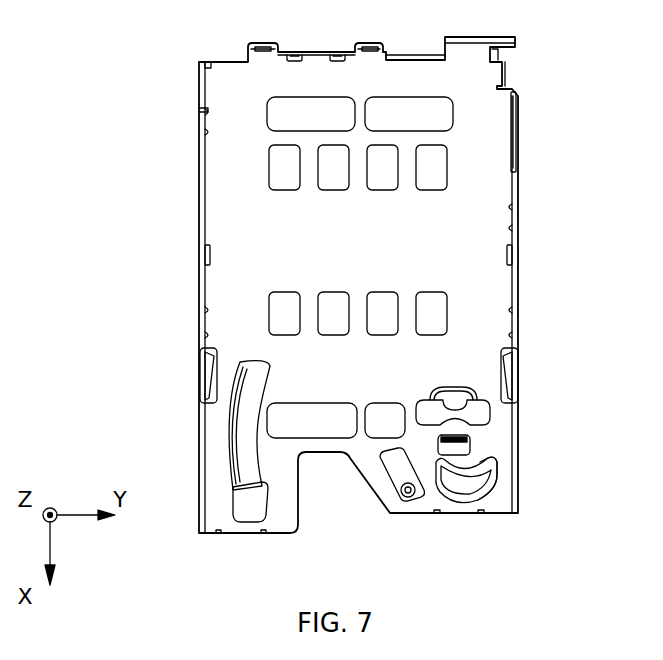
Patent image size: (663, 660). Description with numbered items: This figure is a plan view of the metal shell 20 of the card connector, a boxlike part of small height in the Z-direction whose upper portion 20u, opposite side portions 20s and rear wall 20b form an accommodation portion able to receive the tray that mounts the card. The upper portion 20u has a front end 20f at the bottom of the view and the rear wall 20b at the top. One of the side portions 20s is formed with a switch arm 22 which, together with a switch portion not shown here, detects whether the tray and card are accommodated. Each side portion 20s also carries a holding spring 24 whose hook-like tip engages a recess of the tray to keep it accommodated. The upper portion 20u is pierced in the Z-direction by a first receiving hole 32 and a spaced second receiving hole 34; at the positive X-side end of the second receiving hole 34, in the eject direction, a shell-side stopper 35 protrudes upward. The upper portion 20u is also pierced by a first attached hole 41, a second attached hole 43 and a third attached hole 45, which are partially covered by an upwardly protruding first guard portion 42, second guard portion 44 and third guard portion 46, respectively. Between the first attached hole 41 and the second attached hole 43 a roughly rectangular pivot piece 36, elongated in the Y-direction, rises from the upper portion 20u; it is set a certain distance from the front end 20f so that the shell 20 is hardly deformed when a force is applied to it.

The shell 20 is at (535, 258).
The rear wall 20b is at (316, 52).
The upper portion 20u is at (215, 92).
The side portion 20s is at (199, 197).
The front end 20f is at (243, 536).
The switch arm 22 is at (518, 123).
The holding spring 24 is at (207, 365).
The first receiving hole 32 is at (378, 425).
The second receiving hole 34 is at (397, 468).
The shell-side stopper 35 is at (402, 494).
The pivot piece 36 is at (472, 442).
The first attached hole 41 is at (490, 412).
The first guard portion 42 is at (478, 397).
The second attached hole 43 is at (453, 478).
The second guard portion 44 is at (480, 493).
The third attached hole 45 is at (248, 483).
The third guard portion 46 is at (248, 436).